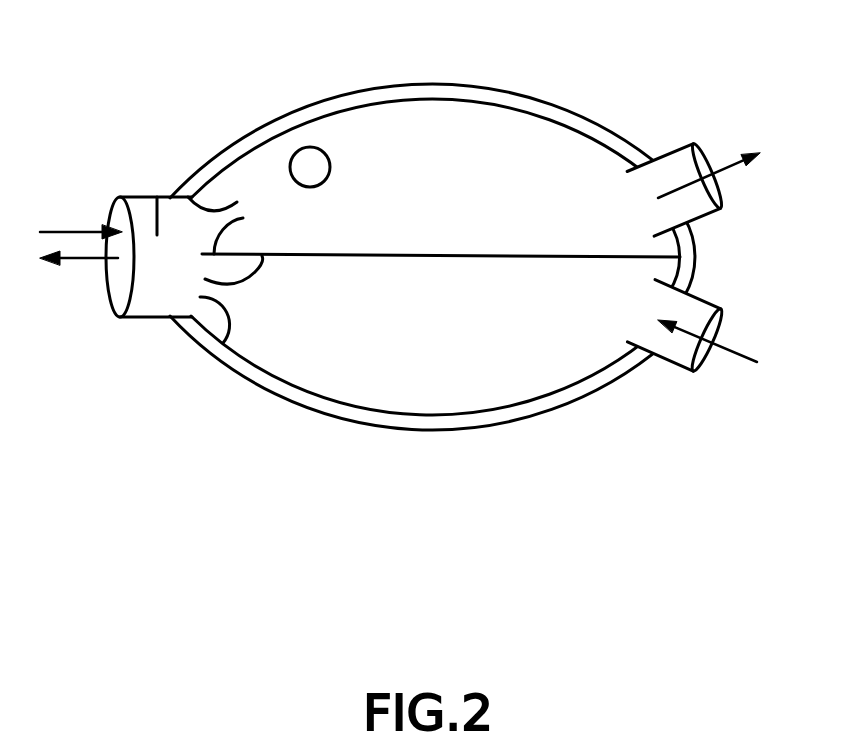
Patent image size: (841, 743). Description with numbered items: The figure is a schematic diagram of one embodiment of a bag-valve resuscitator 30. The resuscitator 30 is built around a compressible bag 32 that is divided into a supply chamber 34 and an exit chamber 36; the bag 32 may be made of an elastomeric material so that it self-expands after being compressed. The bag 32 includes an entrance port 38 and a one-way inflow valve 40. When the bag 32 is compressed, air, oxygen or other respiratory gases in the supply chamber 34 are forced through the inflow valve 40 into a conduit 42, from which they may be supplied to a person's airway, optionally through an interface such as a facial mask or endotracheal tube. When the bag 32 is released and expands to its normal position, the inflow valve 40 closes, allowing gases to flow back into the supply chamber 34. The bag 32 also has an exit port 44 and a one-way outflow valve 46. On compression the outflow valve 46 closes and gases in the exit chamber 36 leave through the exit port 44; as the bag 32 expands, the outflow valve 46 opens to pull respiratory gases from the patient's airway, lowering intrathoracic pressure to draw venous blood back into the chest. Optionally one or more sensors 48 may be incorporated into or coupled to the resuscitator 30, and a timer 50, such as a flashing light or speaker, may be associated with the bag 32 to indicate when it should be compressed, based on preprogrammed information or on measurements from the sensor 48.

The bag-valve resuscitator 30 is at (432, 297).
The compressible bag 32 is at (562, 413).
The supply chamber 34 is at (357, 370).
The exit chamber 36 is at (468, 127).
The entrance port 38 is at (707, 367).
The one-way inflow valve 40 is at (220, 316).
The conduit 42 is at (152, 285).
The exit port 44 is at (725, 198).
The one-way outflow valve 46 is at (224, 207).
The sensor 48 is at (157, 197).
The timer 50 is at (326, 150).